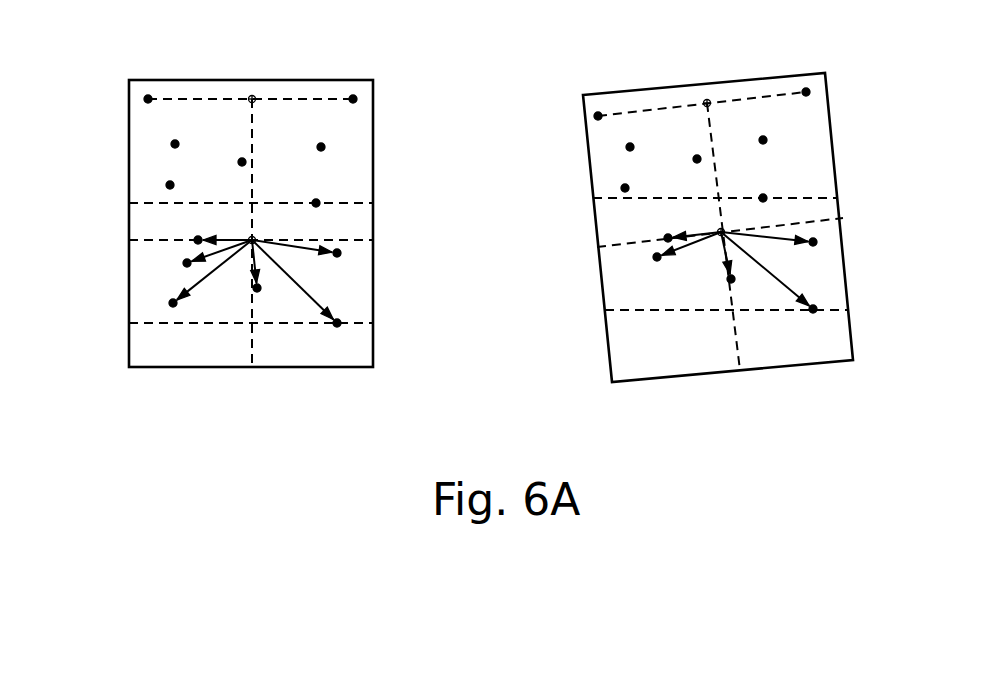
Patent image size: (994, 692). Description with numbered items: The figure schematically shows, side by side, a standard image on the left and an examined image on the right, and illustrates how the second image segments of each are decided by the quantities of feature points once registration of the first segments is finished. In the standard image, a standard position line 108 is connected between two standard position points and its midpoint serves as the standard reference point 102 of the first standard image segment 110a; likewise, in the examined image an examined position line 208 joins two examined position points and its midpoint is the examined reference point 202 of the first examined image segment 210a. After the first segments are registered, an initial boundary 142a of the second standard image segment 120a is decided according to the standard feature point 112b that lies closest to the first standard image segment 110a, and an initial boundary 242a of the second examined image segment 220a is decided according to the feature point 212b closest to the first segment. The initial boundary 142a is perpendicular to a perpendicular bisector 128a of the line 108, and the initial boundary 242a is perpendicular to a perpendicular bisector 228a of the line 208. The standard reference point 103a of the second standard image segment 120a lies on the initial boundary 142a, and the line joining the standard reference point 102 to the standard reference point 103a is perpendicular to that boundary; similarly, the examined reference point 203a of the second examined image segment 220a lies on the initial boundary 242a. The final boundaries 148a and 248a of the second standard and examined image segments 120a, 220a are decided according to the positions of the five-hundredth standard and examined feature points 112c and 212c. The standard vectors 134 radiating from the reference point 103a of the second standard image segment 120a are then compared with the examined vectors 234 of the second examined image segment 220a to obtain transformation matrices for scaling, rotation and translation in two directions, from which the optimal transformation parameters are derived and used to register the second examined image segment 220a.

The standard reference point 102 is at (252, 96).
The standard position line 108 is at (310, 97).
The first standard image segment 110a is at (150, 153).
The perpendicular bisector 128a is at (252, 190).
The standard reference point 103a is at (252, 240).
The standard feature point 112b is at (198, 240).
The second standard image segment 120a is at (150, 299).
The initial boundary 142a is at (330, 240).
The final boundary 148a is at (342, 322).
The standard vectors 134 is at (215, 273).
The standard feature point 112c is at (338, 328).
The examined reference point 202 is at (707, 100).
The examined position line 208 is at (760, 95).
The first examined image segment 210a is at (812, 122).
The perpendicular bisector 228a is at (724, 178).
The examined reference point 203a is at (721, 232).
The feature point 212b is at (666, 240).
The second examined image segment 220a is at (636, 290).
The initial boundary 242a is at (818, 240).
The final boundary 248a is at (832, 310).
The examined vectors 234 is at (695, 245).
The examined feature point 212c is at (811, 316).